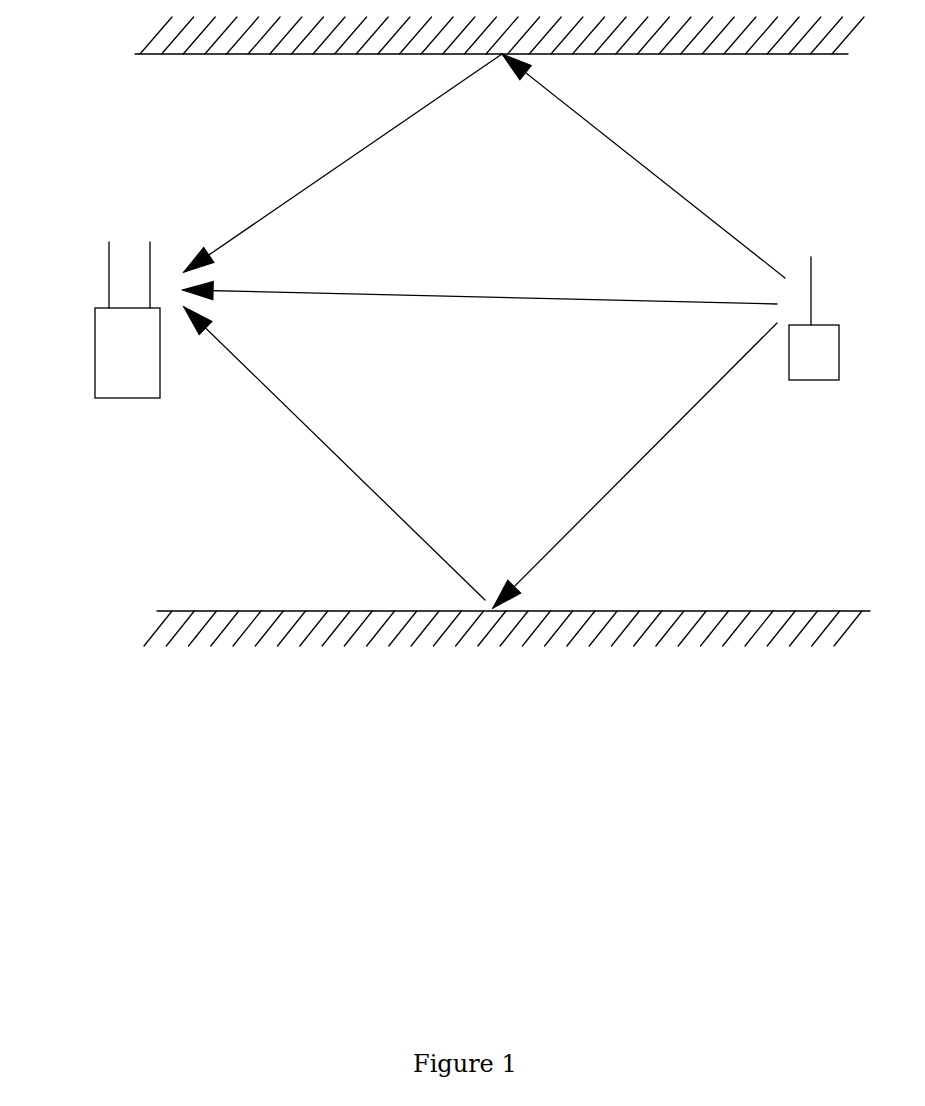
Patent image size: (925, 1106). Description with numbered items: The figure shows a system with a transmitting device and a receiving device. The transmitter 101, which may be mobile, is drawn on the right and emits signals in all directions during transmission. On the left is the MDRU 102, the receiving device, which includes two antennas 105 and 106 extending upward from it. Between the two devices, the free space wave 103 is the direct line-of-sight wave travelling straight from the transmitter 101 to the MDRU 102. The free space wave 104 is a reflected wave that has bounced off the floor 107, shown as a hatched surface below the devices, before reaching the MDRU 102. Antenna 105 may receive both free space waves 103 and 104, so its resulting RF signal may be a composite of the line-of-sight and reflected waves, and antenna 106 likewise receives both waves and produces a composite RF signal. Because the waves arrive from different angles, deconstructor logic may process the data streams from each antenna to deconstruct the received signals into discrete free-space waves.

The transmitter 101 is at (834, 390).
The MDRU 102 is at (128, 410).
The free space wave 103 is at (367, 292).
The free space wave 104 is at (565, 530).
The antenna 105 is at (104, 258).
The antenna 106 is at (157, 238).
The floor 107 is at (203, 611).